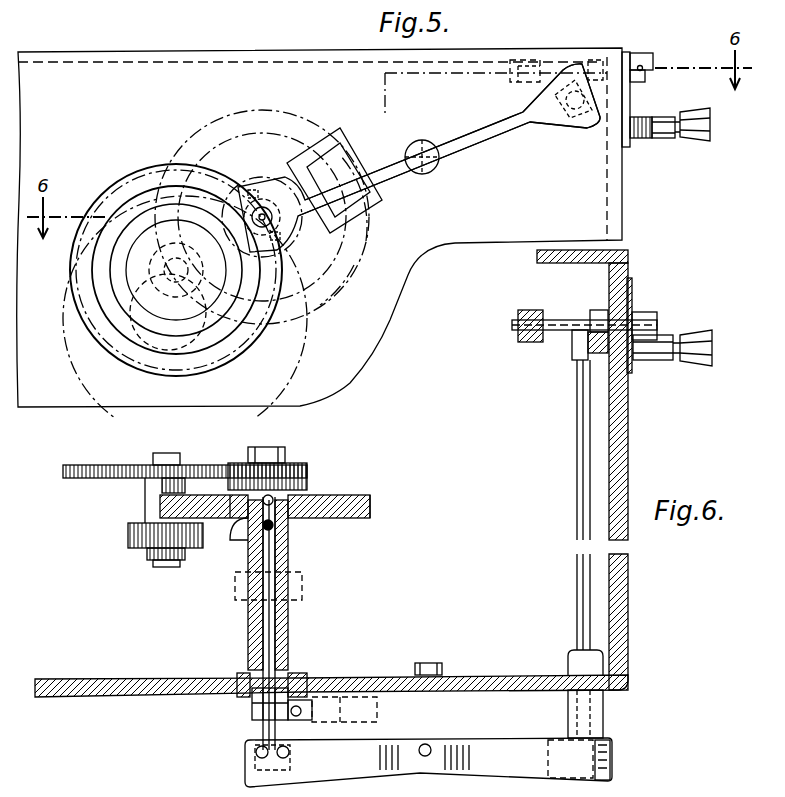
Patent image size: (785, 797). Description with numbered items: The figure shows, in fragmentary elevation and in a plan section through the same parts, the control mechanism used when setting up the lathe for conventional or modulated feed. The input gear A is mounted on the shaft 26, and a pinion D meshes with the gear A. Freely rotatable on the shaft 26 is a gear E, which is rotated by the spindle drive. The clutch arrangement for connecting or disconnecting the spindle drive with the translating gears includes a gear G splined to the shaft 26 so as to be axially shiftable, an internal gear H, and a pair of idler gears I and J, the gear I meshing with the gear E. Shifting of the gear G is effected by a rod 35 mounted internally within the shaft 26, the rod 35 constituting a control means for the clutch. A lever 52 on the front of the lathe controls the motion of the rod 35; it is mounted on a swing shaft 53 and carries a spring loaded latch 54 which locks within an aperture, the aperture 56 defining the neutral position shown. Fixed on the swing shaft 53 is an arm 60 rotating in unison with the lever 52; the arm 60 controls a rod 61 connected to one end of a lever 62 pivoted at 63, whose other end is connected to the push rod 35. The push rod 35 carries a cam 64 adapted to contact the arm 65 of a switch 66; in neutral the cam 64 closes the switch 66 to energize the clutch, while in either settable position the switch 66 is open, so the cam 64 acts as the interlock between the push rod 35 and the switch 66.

In FIG. 6, the shaft 26 is at (275, 447).
In FIG. 6, the rod 35 is at (275, 655).
In FIG. 5, the lever 52 is at (665, 139).
In FIG. 6, the lever 52 is at (665, 360).
In FIG. 5, the swing shaft 53 is at (655, 62).
In FIG. 6, the swing shaft 53 is at (548, 312).
In FIG. 5, the spring loaded latch 54 is at (658, 118).
In FIG. 5, the aperture 56 is at (681, 115).
In FIG. 6, the aperture 56 is at (683, 330).
In FIG. 5, the arm 60 is at (597, 58).
In FIG. 6, the arm 60 is at (598, 310).
In FIG. 5, the rod 61 is at (565, 128).
In FIG. 6, the rod 61 is at (577, 475).
In FIG. 5, the lever 62 is at (500, 133).
In FIG. 6, the lever 62 is at (506, 739).
In FIG. 5, the pivot 63 is at (445, 165).
In FIG. 6, the pivot 63 is at (425, 757).
In FIG. 5, the cam 64 is at (355, 266).
In FIG. 6, the cam 64 is at (252, 711).
In FIG. 5, the arm 65 is at (364, 241).
In FIG. 6, the arm 65 is at (298, 719).
In FIG. 5, the switch 66 is at (337, 165).
In FIG. 6, the switch 66 is at (378, 712).
In FIG. 5, the input gear A is at (268, 133).
In FIG. 5, the pinion D is at (112, 192).
In FIG. 5, the gear E is at (307, 115).
In FIG. 6, the gear E is at (300, 463).
In FIG. 5, the gear G is at (232, 111).
In FIG. 6, the gear G is at (372, 503).
In FIG. 6, the internal gear H is at (320, 495).
In FIG. 5, the idler gear I is at (68, 404).
In FIG. 6, the idler gear I is at (65, 479).
In FIG. 5, the idler gear J is at (130, 307).
In FIG. 6, the idler gear J is at (128, 538).